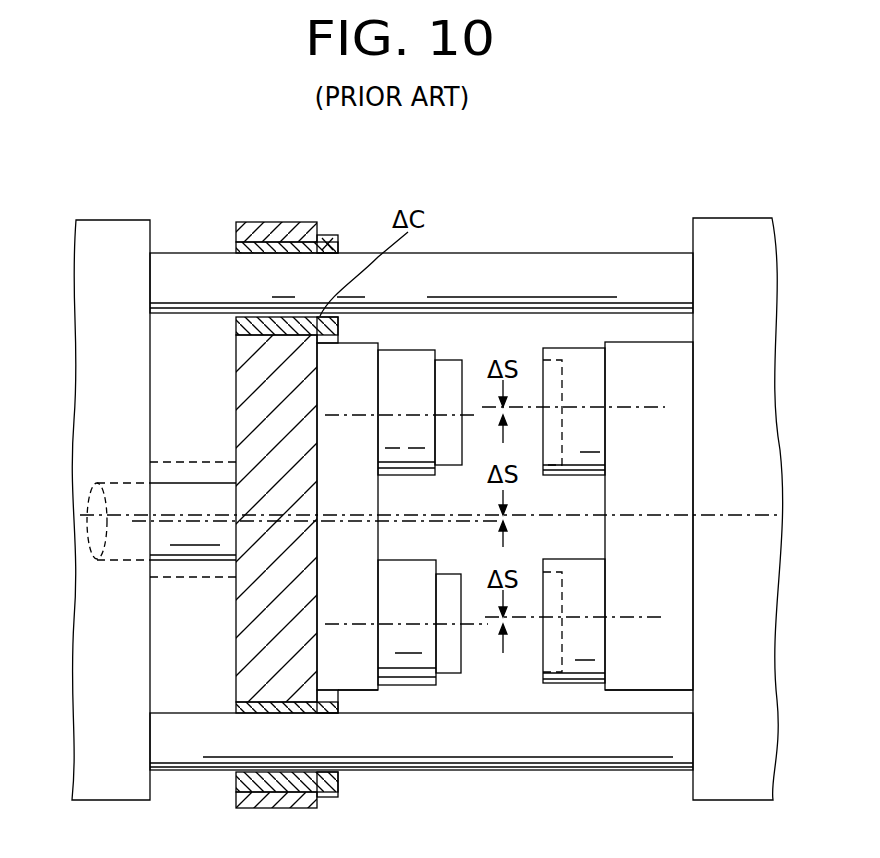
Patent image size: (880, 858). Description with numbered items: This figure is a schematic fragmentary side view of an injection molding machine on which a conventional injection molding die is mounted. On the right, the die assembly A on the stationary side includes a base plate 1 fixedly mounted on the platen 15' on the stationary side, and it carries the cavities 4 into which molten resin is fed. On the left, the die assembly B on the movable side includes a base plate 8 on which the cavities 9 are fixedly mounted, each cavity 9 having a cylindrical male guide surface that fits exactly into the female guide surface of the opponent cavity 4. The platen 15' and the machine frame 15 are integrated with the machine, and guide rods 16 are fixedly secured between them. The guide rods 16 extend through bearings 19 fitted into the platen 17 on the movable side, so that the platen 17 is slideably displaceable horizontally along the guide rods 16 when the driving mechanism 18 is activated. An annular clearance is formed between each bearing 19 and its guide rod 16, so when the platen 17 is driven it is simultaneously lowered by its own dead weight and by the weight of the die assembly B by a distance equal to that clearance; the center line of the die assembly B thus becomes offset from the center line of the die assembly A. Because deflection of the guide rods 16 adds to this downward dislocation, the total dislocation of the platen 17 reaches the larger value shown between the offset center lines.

The base plate 1 is at (655, 594).
The cavities 4 is at (573, 362).
The base plate 8 is at (357, 595).
The cavities 9 is at (418, 373).
The machine frame 15 is at (111, 478).
The platen on the stationary side 15' is at (738, 475).
The guide rods 16 is at (598, 268).
The platen on the movable side 17 is at (295, 228).
The driving mechanism 18 is at (198, 420).
The bearings 19 is at (333, 238).
The die assembly on the stationary side A is at (633, 673).
The die assembly on the movable side B is at (363, 683).